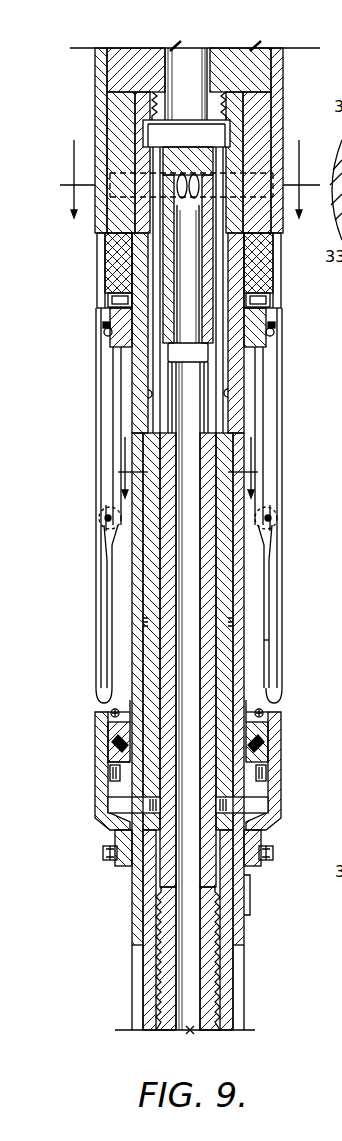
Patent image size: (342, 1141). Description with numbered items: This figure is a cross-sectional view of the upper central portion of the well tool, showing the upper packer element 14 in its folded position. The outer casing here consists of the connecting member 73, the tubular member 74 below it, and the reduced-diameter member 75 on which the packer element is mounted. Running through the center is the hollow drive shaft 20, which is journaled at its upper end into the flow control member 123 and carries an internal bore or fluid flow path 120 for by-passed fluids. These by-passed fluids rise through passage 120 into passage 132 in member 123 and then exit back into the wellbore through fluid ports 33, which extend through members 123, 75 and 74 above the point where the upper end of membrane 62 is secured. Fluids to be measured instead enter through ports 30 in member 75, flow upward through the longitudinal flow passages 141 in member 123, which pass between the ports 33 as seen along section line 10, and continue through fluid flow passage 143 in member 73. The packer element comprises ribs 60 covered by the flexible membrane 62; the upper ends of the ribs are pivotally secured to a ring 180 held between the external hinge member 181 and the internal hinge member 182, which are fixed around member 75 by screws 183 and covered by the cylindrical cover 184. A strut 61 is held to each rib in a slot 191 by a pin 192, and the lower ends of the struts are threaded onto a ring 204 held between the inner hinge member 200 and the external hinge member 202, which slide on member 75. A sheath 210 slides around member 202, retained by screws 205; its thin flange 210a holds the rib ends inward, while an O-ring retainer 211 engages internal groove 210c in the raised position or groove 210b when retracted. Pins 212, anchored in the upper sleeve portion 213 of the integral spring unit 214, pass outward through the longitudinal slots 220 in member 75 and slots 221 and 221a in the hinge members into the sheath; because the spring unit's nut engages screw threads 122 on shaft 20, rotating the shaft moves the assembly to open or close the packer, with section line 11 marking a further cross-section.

The connecting member 73 is at (113, 48).
The tubular member 74 is at (96, 62).
The fluid flow passage 143 is at (207, 68).
The fluid ports 33 is at (122, 167).
The section line 10- 10 is at (190, 189).
The cylindrical-shaped cover 184 is at (97, 240).
The passage 132 is at (200, 272).
The screws 183 is at (262, 294).
The external cylindrical hinge member 181 is at (108, 318).
The ring 180 is at (104, 333).
The membrane 62 is at (284, 358).
The internal cylindrical hinge member 182 is at (122, 350).
The flow passages 141 is at (150, 404).
The flow control member 123 is at (232, 423).
The ports 30 is at (140, 478).
The upper packer element 14 is at (97, 497).
The section line 11- 11 is at (190, 477).
The slot 191 is at (274, 504).
The pin 192 is at (280, 520).
The ribs 60 is at (108, 574).
The longitudinal slots 220 is at (143, 620).
The hollow drive shaft 20 is at (160, 643).
The strut 61 is at (262, 648).
The ring 204 is at (263, 712).
The sheath 210 is at (97, 778).
The flange 210a is at (97, 718).
The O-ring retainer 211 is at (110, 752).
The internal groove 210b is at (110, 761).
The internal groove 210c is at (109, 787).
The pins 212 is at (120, 805).
The slot 221 is at (277, 793).
The slot 221a is at (270, 775).
The member 75 is at (132, 884).
The inner hinge member 200 is at (248, 862).
The screws 205 is at (104, 852).
The external hinge member 202 is at (262, 861).
The upper sleeve portion 213 is at (248, 880).
The integral spring unit 214 is at (145, 988).
The screw threads 122 is at (218, 970).
The internal bore or fluid flow path 120 is at (192, 1032).